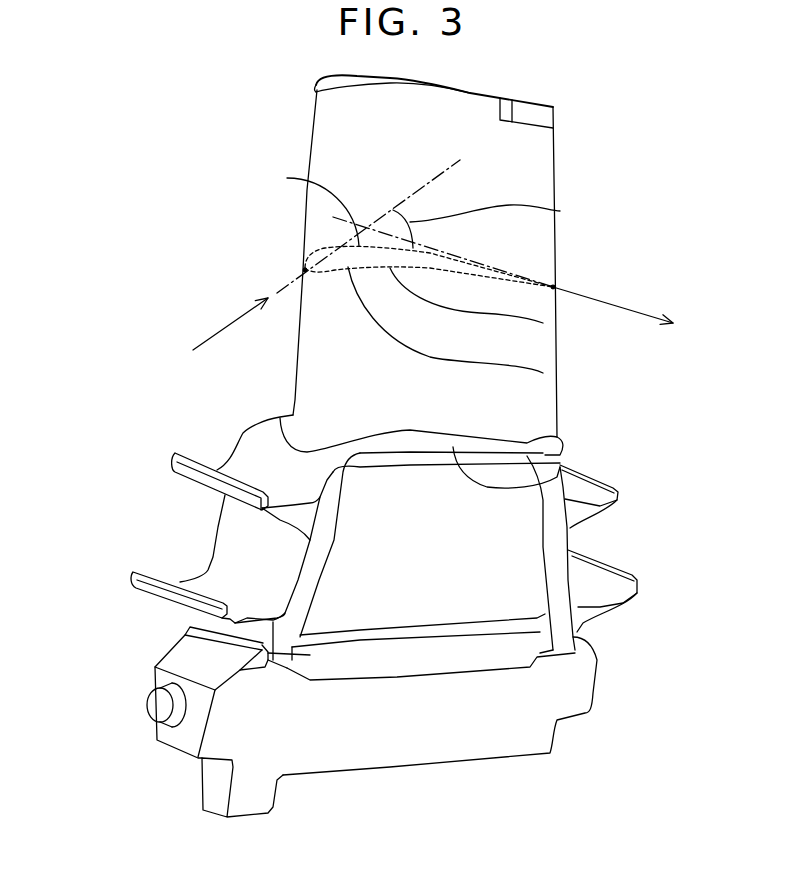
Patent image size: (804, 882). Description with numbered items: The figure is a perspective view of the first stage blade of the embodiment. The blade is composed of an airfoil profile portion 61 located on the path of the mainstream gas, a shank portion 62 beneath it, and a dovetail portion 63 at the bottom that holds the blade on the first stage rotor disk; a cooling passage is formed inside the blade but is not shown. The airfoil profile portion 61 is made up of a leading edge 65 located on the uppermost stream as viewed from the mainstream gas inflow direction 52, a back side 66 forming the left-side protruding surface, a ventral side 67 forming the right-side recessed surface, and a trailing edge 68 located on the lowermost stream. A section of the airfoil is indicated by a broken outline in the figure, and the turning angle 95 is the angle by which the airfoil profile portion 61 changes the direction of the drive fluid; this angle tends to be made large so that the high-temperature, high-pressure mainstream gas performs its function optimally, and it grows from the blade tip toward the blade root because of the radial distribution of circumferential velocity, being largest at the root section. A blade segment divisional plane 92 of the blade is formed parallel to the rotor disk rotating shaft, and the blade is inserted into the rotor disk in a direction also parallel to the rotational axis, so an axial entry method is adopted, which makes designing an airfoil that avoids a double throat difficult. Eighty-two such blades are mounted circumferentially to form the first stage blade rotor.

The mainstream gas inflow direction 52 is at (230, 327).
The airfoil profile portion 61 is at (543, 323).
The shank portion 62 is at (450, 550).
The dovetail portion 63 is at (438, 703).
The leading edge 65 is at (305, 270).
The back side 66 is at (288, 179).
The ventral side 67 is at (543, 373).
The trailing edge 68 is at (553, 287).
The blade segment divisional plane 92 is at (560, 468).
The turning angle 95 is at (560, 211).